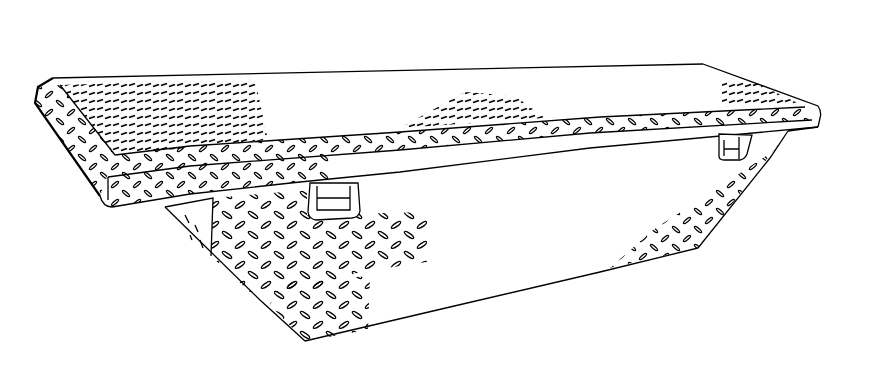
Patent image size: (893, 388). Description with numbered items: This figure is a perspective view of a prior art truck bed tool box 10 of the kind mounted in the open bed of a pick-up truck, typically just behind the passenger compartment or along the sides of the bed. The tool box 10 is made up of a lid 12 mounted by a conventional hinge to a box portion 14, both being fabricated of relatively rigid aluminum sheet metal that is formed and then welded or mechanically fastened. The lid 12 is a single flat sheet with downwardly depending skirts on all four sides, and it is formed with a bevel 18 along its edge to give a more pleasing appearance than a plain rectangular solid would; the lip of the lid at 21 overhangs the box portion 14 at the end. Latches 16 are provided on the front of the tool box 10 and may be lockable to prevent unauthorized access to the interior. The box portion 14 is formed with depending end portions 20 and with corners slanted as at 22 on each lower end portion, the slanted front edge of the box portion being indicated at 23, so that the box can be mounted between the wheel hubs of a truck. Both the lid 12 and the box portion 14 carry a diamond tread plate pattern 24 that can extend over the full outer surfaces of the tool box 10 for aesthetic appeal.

The tool box 10 is at (373, 68).
The lid 12 is at (590, 83).
The box portion 14 is at (440, 288).
The latches 16 is at (362, 213).
The bevel 18 is at (63, 110).
The depending end portions 20 is at (142, 232).
The lid overhang lip 21 is at (802, 135).
The slanted corners 22 is at (746, 225).
The sloped front wall edge 23 is at (222, 303).
The diamond tread plate pattern 24 is at (143, 96).